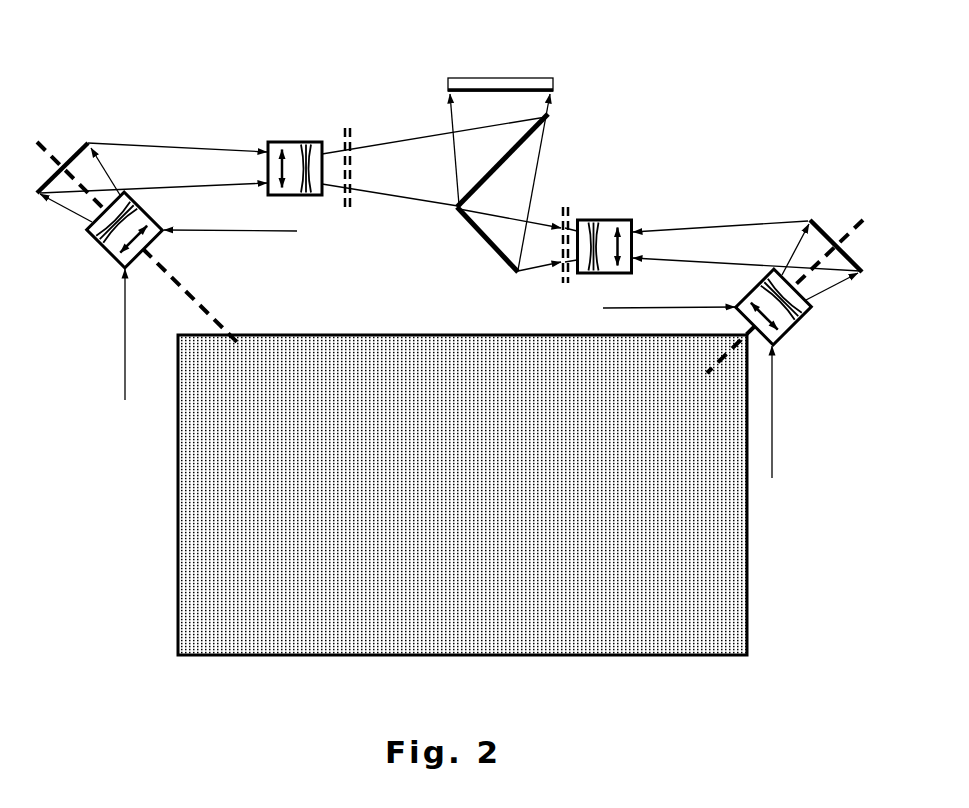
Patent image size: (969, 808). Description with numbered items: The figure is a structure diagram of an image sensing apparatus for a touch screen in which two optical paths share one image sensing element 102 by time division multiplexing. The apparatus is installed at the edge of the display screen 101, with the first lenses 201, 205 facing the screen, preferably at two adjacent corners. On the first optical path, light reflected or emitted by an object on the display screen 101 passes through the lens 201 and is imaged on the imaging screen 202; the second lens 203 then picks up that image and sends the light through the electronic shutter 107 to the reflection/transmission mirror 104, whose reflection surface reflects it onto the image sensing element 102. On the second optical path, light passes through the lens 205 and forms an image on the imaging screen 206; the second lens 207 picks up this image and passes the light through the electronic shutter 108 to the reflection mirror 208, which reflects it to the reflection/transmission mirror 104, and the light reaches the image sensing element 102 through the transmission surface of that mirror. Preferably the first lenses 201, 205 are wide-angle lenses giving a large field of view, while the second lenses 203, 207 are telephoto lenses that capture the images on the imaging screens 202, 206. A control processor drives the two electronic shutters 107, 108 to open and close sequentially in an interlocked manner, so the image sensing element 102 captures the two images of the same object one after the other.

The display screen 101 is at (217, 477).
The image sensing element 102 is at (500, 78).
The reflection/transmission mirror 104 is at (481, 178).
The electronic shutter 107 is at (347, 126).
The electronic shutter 108 is at (565, 205).
The first lens 201 is at (108, 252).
The imaging screen 202 is at (76, 152).
The second lens 203 is at (295, 141).
The first lens 205 is at (788, 332).
The imaging screen 206 is at (823, 232).
The second lens 207 is at (605, 219).
The reflection mirror 208 is at (484, 248).